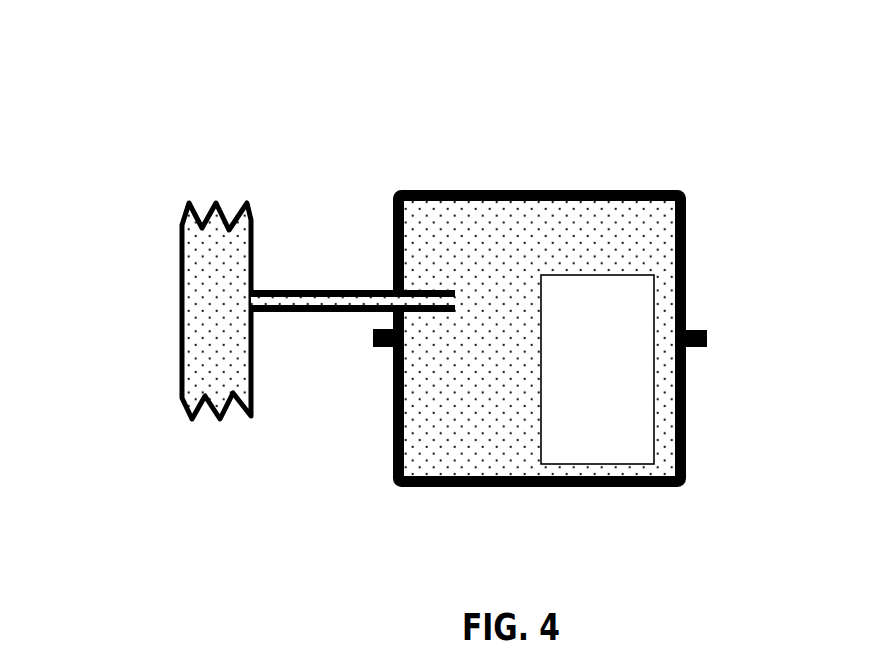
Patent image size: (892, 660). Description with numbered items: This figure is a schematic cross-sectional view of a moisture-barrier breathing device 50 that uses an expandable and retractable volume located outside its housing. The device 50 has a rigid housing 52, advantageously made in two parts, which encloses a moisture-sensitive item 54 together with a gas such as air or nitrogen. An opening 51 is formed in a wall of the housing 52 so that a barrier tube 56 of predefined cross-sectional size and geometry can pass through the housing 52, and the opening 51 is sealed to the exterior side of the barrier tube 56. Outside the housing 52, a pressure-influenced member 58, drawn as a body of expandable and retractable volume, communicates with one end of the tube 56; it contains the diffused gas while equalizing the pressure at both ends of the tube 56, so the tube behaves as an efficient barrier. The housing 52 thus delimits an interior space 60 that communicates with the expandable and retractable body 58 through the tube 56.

The moisture-barrier breathing device 50 is at (423, 290).
The opening 51 is at (390, 290).
The rigid housing 52 is at (490, 487).
The moisture-sensitive item 54 is at (642, 323).
The barrier tube 56 is at (346, 290).
The pressure-influenced member 58 is at (203, 240).
The interior space 60 is at (443, 407).